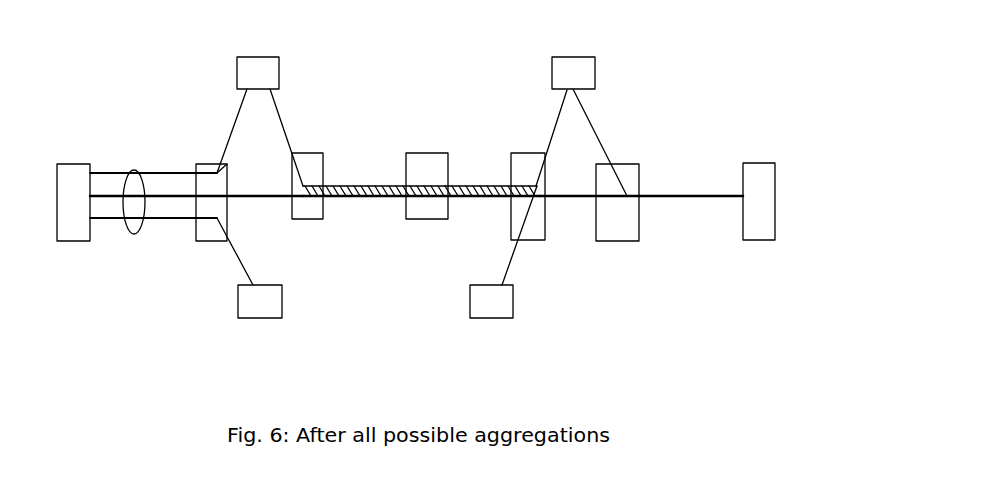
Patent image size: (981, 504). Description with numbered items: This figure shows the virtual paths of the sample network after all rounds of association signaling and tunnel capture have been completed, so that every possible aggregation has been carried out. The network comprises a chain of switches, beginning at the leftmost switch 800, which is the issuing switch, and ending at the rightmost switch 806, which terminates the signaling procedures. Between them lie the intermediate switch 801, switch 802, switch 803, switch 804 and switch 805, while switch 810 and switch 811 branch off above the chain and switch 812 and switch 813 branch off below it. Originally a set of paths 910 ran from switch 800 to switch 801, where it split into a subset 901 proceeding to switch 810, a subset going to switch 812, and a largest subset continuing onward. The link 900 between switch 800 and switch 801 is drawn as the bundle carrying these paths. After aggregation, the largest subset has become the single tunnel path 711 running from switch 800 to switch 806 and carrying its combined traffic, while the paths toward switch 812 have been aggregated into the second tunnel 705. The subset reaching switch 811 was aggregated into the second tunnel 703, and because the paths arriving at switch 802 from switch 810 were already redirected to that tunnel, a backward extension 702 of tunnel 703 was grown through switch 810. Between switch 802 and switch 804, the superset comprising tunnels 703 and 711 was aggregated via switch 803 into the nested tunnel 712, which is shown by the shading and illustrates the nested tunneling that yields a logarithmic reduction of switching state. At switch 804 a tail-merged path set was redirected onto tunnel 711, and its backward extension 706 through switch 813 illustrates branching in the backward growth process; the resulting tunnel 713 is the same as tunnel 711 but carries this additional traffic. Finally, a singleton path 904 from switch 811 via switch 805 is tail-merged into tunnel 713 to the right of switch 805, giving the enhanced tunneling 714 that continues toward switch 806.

The switch 800 is at (78, 173).
The aggregated link between nodes 800 and 801 900 is at (100, 221).
The set of paths 910 is at (130, 166).
The switch 801 is at (196, 175).
The subset 901 is at (237, 117).
The switch 810 is at (258, 68).
The backward extension 702 is at (280, 120).
The switch 802 is at (323, 153).
The tunnel path 711 is at (260, 197).
The tunnel 712 is at (358, 197).
The switch 803 is at (425, 219).
The switch 804 is at (511, 153).
The second tunnel 703 is at (555, 127).
The switch 811 is at (573, 68).
The singleton path 904 is at (594, 127).
The switch 805 is at (639, 165).
The switch 806 is at (763, 173).
The tunnel 713 is at (565, 197).
The enhanced tunneling 714 is at (690, 197).
The second tunnel 705 is at (235, 250).
The switch 812 is at (260, 318).
The backwards extension 706 is at (514, 256).
The switch 813 is at (490, 307).